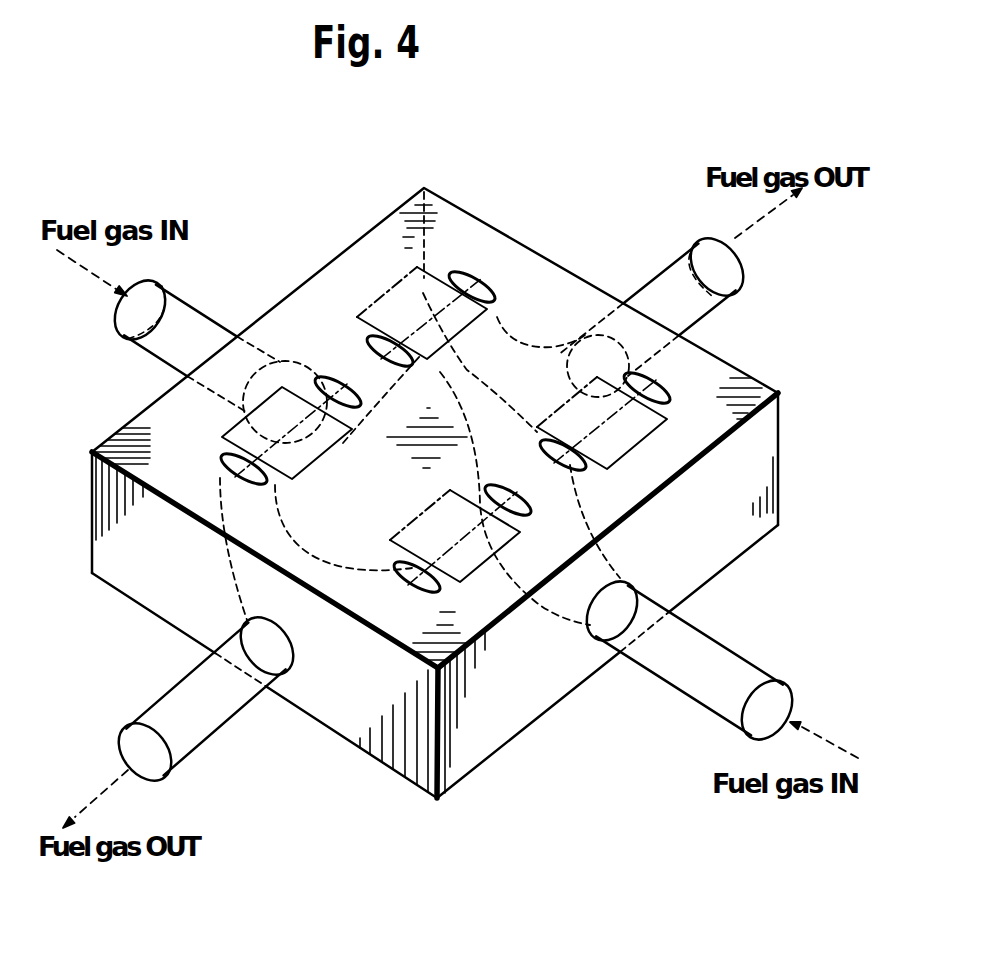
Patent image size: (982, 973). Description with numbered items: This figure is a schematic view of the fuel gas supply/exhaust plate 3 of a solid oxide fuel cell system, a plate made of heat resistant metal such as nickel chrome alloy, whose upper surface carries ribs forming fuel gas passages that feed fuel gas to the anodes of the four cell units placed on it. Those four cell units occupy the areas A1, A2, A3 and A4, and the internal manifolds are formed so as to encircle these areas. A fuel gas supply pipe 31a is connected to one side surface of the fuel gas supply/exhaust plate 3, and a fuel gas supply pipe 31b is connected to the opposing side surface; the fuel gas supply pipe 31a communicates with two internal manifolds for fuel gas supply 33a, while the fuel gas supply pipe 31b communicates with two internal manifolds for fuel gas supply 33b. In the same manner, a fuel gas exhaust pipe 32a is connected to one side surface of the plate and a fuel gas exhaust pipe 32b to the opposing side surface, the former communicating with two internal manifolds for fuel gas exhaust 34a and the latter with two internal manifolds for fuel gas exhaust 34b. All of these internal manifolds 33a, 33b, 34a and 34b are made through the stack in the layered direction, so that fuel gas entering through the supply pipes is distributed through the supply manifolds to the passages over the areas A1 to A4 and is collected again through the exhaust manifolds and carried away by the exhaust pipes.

The fuel gas supply/exhaust plate 3 is at (370, 250).
The fuel gas supply pipe 31a is at (723, 668).
The fuel gas supply pipe 31b is at (190, 328).
The fuel gas exhaust pipe 32a is at (193, 730).
The fuel gas exhaust pipe 32b is at (697, 307).
The internal manifold for fuel gas supply 33a is at (512, 503).
The internal manifold for fuel gas supply 33b is at (326, 384).
The internal manifold for fuel gas exhaust 34a is at (415, 580).
The internal manifold for fuel gas exhaust 34b is at (645, 378).
The area A1 is at (470, 563).
The area A2 is at (250, 443).
The area A3 is at (595, 405).
The area A4 is at (407, 303).